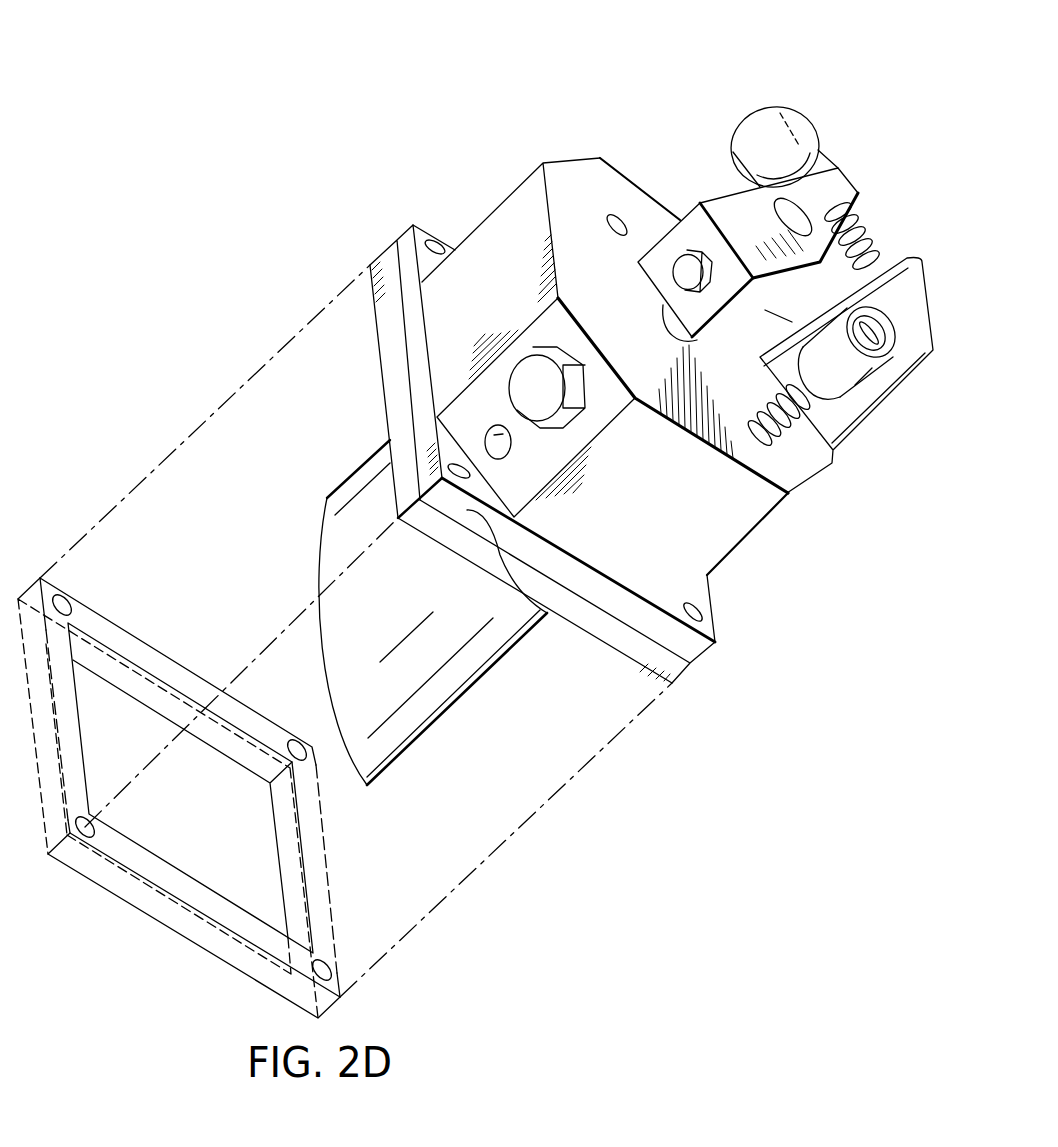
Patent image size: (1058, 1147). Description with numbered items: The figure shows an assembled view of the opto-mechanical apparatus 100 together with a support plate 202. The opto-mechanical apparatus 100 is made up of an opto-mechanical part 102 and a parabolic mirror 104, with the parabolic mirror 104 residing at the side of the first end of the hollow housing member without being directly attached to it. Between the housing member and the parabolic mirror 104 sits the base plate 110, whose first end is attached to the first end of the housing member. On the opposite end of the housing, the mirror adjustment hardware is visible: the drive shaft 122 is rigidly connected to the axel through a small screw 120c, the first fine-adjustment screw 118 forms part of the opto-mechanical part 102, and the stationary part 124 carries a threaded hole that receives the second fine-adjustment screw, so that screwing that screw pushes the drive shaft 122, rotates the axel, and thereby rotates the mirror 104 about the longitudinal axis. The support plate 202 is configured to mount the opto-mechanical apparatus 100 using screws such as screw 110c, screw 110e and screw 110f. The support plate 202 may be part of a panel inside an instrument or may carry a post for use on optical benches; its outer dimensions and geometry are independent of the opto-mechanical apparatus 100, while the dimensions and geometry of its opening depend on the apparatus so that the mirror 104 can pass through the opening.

The opto-mechanical apparatus 100 is at (692, 64).
The opto-mechanical part 102 is at (566, 153).
The parabolic mirror 104 is at (362, 480).
The base plate 110 is at (395, 224).
The screw 110c is at (708, 610).
The screw 110e is at (440, 240).
The screw 110f is at (467, 510).
The first fine-adjustment screw 118 is at (778, 405).
The small screw 120c is at (677, 273).
The drive shaft 122 is at (720, 198).
The stationary part 124 is at (905, 268).
The support plate 202 is at (600, 628).